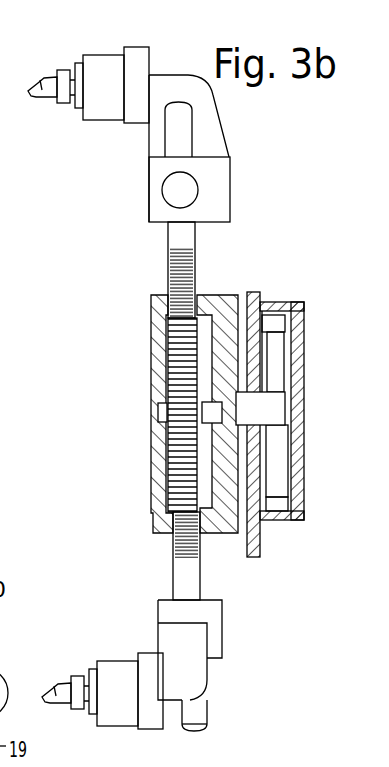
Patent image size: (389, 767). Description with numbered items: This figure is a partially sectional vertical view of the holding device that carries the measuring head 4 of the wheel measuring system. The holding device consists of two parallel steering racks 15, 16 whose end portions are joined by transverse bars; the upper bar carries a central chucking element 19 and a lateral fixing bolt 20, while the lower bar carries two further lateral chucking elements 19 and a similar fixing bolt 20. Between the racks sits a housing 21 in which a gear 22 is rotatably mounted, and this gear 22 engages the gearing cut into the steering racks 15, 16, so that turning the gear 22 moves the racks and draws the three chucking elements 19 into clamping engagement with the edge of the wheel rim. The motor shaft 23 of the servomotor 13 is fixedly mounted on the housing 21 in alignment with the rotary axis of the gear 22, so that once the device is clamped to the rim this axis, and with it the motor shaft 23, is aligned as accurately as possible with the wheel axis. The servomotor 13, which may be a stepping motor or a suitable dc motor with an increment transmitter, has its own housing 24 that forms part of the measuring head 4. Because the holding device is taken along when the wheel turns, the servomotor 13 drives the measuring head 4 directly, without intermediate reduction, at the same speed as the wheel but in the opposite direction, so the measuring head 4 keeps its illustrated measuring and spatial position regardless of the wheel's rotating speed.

The measuring head 4 is at (270, 540).
The servomotor 13 is at (307, 486).
The steering rack 15 is at (183, 239).
The steering rack 16 is at (228, 247).
The chucking element 19 is at (43, 79).
The fixing bolt 20 is at (191, 190).
The housing 21 is at (160, 357).
The gear 22 is at (184, 470).
The motor shaft 23 is at (269, 408).
The housing 24 is at (303, 522).